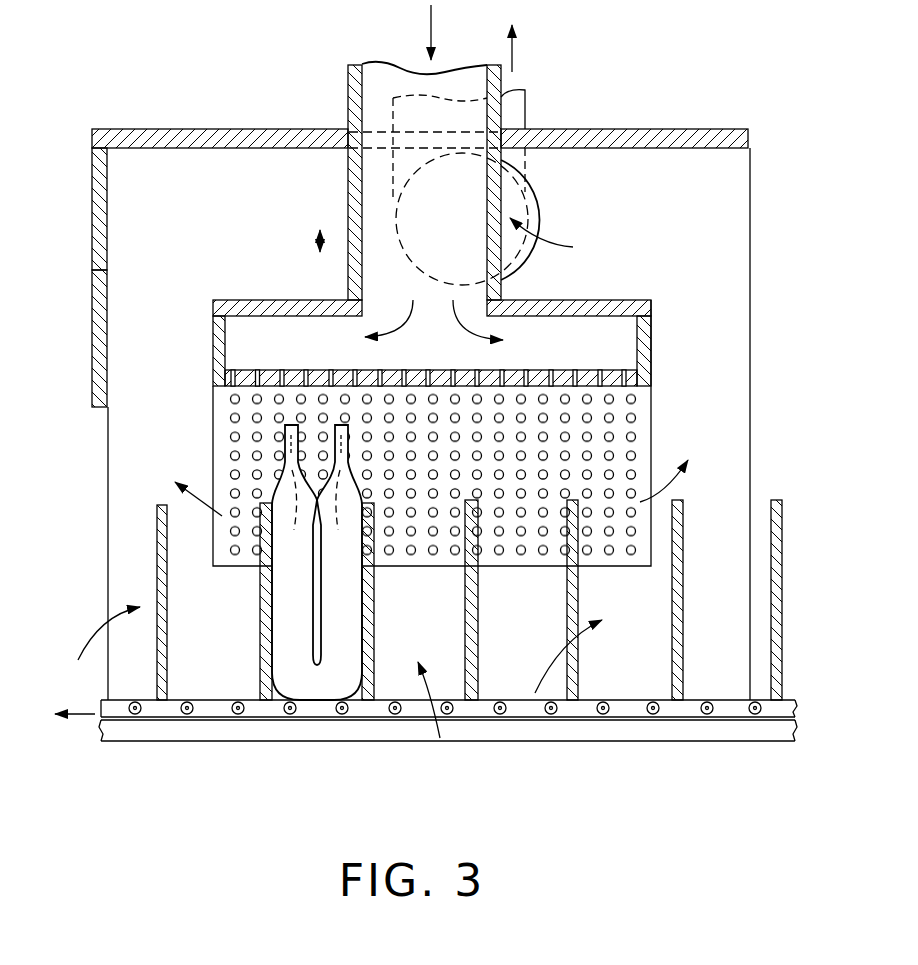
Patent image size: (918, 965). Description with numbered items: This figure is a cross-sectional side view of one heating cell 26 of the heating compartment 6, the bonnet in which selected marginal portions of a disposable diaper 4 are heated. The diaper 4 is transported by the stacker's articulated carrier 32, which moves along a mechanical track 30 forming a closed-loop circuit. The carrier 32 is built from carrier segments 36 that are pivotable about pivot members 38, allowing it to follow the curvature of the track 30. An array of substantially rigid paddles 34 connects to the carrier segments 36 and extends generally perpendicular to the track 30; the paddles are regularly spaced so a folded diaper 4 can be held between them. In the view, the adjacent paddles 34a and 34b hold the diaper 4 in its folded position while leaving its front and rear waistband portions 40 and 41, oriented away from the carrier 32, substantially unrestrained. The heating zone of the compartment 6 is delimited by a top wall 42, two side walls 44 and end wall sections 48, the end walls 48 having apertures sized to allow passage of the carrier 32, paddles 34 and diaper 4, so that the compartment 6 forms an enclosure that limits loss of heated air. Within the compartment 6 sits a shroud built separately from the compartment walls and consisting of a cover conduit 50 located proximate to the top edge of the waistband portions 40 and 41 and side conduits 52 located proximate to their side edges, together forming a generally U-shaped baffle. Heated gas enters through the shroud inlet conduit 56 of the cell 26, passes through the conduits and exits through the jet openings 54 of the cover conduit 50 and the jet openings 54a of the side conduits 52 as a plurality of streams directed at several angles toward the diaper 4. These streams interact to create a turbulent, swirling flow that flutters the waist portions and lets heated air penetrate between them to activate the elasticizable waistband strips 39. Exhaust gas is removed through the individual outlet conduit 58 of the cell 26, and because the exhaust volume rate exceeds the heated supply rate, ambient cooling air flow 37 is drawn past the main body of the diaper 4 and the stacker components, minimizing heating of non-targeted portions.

The disposable diaper 4 is at (352, 620).
The heating compartment 6 is at (680, 129).
The heating cell 26 is at (652, 75).
The mechanical track 30 is at (137, 745).
The articulated carrier 32 is at (225, 722).
The paddles 34 is at (683, 607).
The paddle 34a is at (258, 653).
The paddle 34b is at (375, 580).
The carrier segments 36 is at (580, 708).
The cooling air flow 37 is at (101, 650).
The pivot members 38 is at (363, 717).
The elasticizable waistband strips 39 is at (314, 515).
The front waistband portion 40 is at (284, 427).
The rear waistband portion 41 is at (333, 427).
The top wall 42 is at (160, 129).
The side walls 44 is at (128, 455).
The end wall sections 48 is at (91, 268).
The cover conduit 50 is at (602, 299).
The side conduit 52 is at (653, 401).
The jet openings 54 is at (560, 370).
The jet openings 54a is at (257, 423).
The shroud inlet conduit 56 is at (347, 98).
The outlet conduit 58 is at (528, 105).